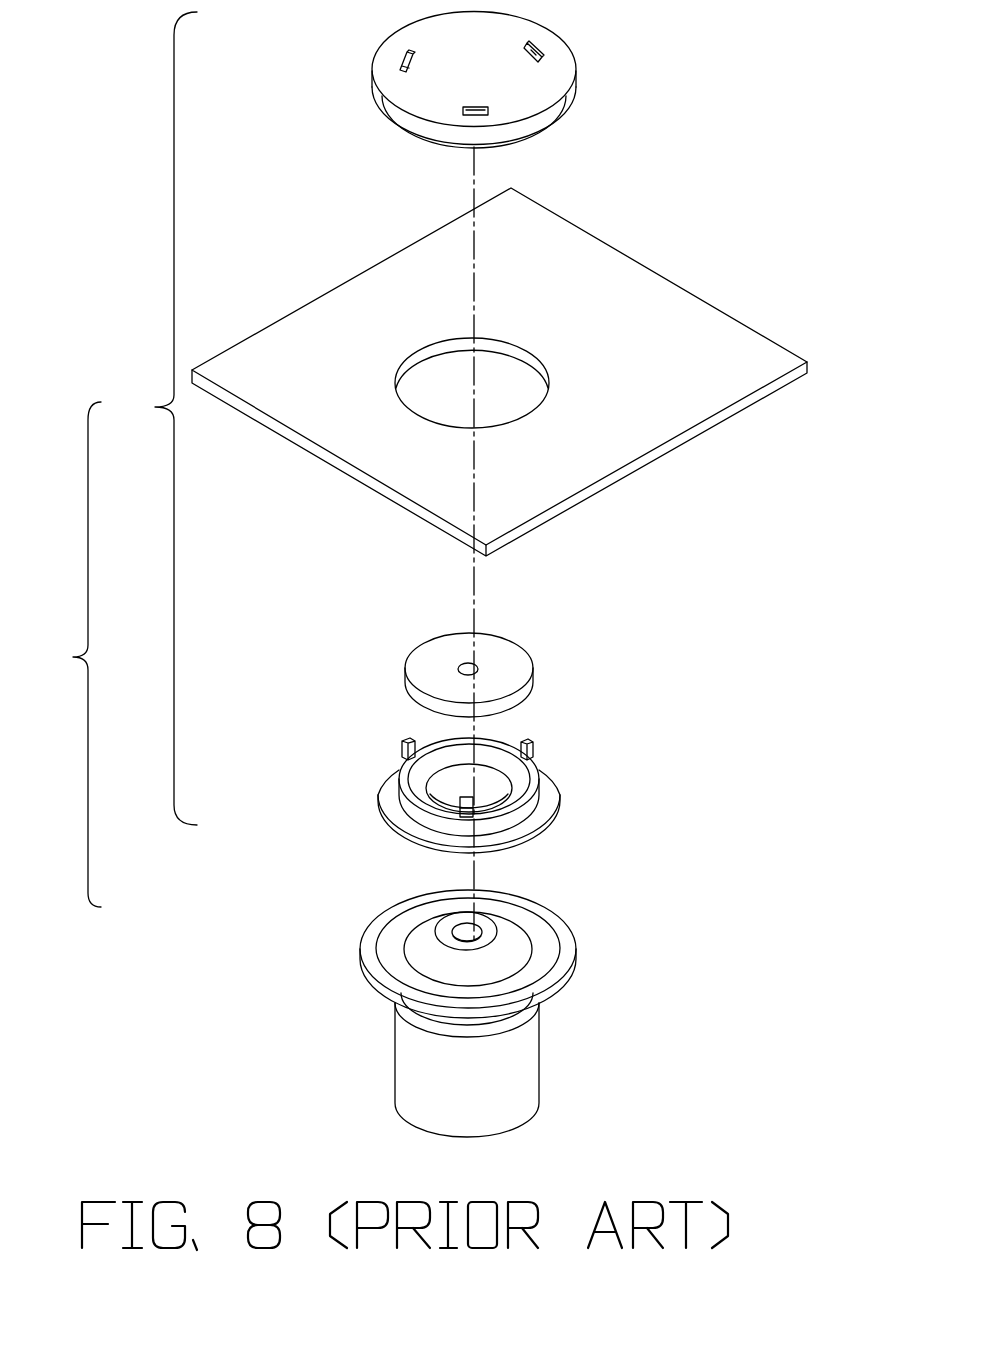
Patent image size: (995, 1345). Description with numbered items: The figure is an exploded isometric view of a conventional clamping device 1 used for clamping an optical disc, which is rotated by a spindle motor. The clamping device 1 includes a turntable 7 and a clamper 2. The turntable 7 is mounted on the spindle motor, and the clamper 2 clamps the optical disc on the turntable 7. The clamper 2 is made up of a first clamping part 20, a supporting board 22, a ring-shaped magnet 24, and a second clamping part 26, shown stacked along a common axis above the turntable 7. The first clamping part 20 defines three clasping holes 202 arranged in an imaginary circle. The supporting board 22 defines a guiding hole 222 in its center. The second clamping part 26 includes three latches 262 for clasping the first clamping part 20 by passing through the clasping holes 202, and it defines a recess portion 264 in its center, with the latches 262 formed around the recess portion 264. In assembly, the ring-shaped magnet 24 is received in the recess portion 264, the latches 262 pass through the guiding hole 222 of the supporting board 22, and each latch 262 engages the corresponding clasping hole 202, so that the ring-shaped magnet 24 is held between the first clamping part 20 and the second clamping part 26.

The clamping device 1 is at (74, 654).
The clamper 2 is at (157, 418).
The turntable 7 is at (398, 966).
The first clamping part 20 is at (590, 68).
The clasping holes 202 is at (401, 66).
The supporting board 22 is at (307, 288).
The guiding hole 222 is at (449, 377).
The ring-shaped magnet 24 is at (547, 650).
The second clamping part 26 is at (565, 766).
The latches 262 is at (404, 749).
The recess portion 264 is at (521, 790).